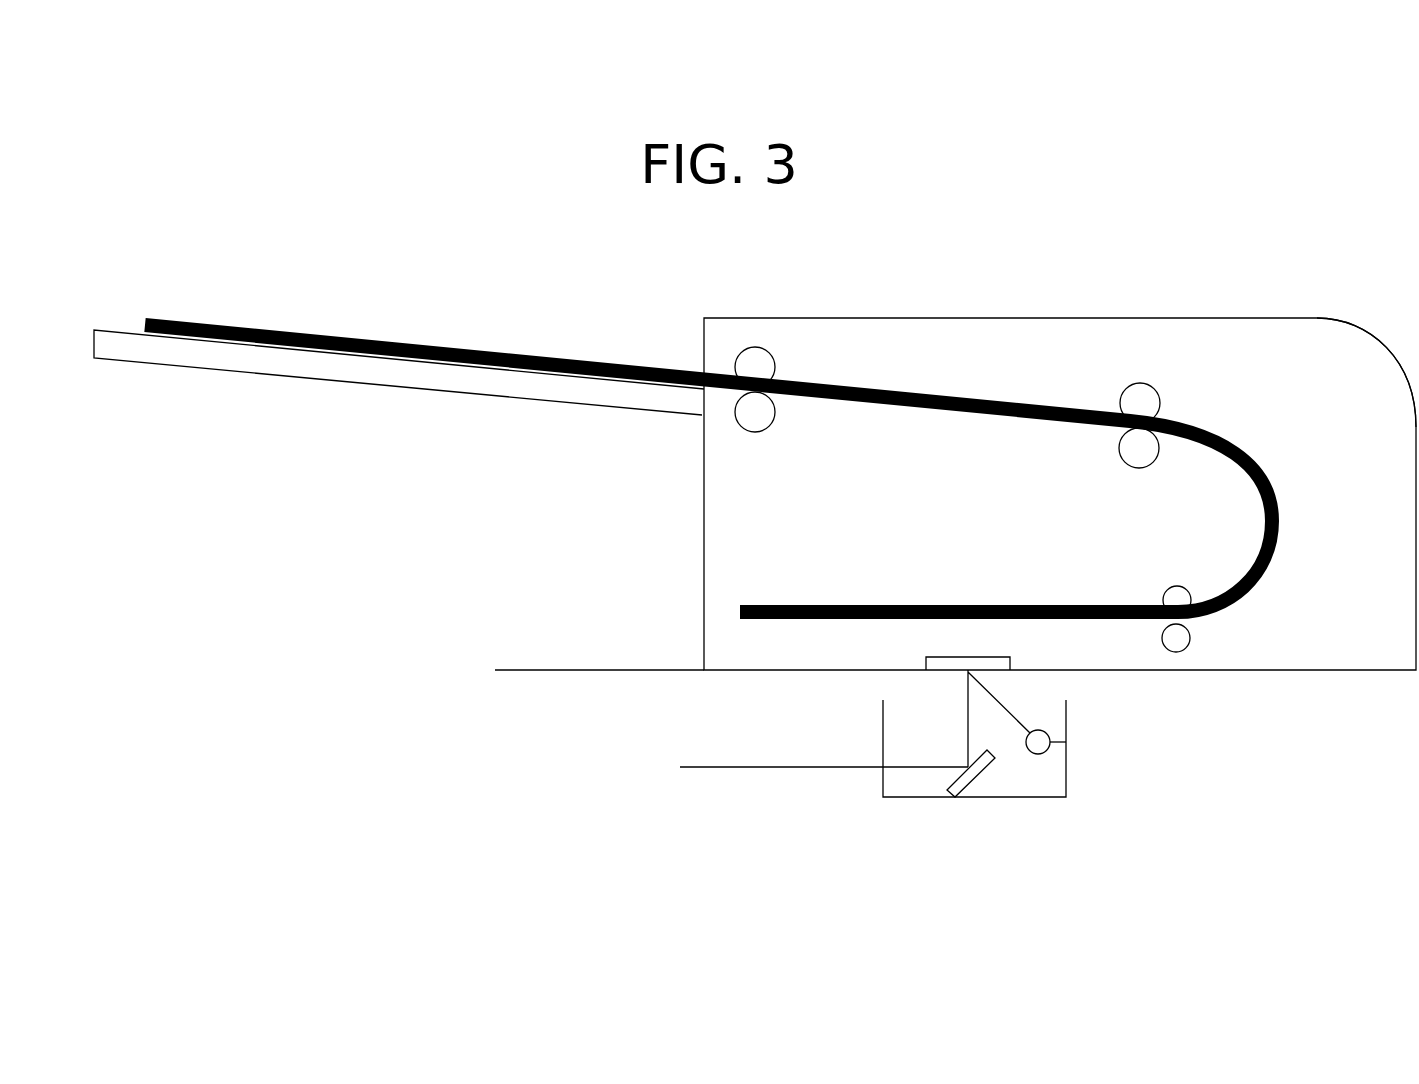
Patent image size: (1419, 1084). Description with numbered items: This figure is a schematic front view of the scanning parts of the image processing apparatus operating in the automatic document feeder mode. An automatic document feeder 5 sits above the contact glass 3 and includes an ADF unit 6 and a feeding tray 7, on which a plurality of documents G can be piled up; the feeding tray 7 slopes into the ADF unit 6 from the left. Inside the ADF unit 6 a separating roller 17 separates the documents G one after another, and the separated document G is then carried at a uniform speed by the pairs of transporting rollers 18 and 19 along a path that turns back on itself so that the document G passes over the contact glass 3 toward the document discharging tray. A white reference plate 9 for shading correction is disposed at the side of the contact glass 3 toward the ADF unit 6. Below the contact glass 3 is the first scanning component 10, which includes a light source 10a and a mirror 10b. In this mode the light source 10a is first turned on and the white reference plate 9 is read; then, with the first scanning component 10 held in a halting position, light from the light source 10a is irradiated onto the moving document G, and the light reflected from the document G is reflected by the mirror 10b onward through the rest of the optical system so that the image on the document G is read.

The contact glass 3 is at (588, 671).
The automatic document feeder 5 is at (927, 294).
The ADF unit 6 is at (1218, 318).
The feeding tray 7 is at (435, 390).
The white reference plate 9 is at (926, 662).
The first scanning component 10 is at (1068, 773).
The light source 10a is at (1066, 742).
The mirror 10b is at (978, 778).
The separating roller 17 is at (781, 394).
The transporting roller pair 18 is at (1118, 403).
The transporting roller pair 19 is at (1162, 637).
The document G is at (525, 355).